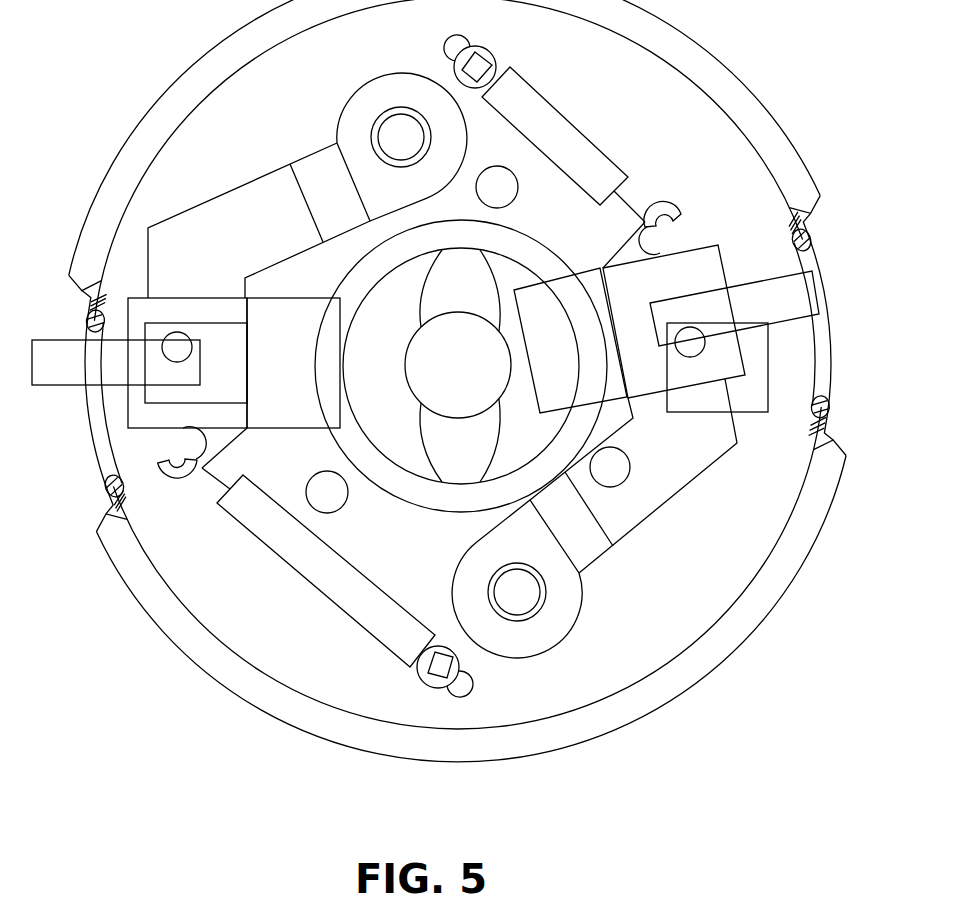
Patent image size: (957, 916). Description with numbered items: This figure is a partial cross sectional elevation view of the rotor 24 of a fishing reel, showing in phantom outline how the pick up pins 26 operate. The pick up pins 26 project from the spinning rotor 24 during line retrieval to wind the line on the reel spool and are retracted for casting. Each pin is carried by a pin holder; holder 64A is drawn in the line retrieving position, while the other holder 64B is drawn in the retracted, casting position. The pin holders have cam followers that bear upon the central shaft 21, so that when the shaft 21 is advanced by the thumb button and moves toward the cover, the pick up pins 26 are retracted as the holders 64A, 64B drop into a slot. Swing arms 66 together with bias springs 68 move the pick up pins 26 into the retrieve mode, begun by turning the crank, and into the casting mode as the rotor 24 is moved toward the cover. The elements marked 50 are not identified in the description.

The rotor 24 is at (777, 133).
The pick up pins 26 is at (54, 338).
The shaft 21 is at (412, 379).
The brushes 50 is at (478, 299).
The swing arms 66 is at (243, 179).
The bias springs 68 is at (570, 118).
The pin holder 64A is at (314, 409).
The pin holder 64B is at (670, 299).